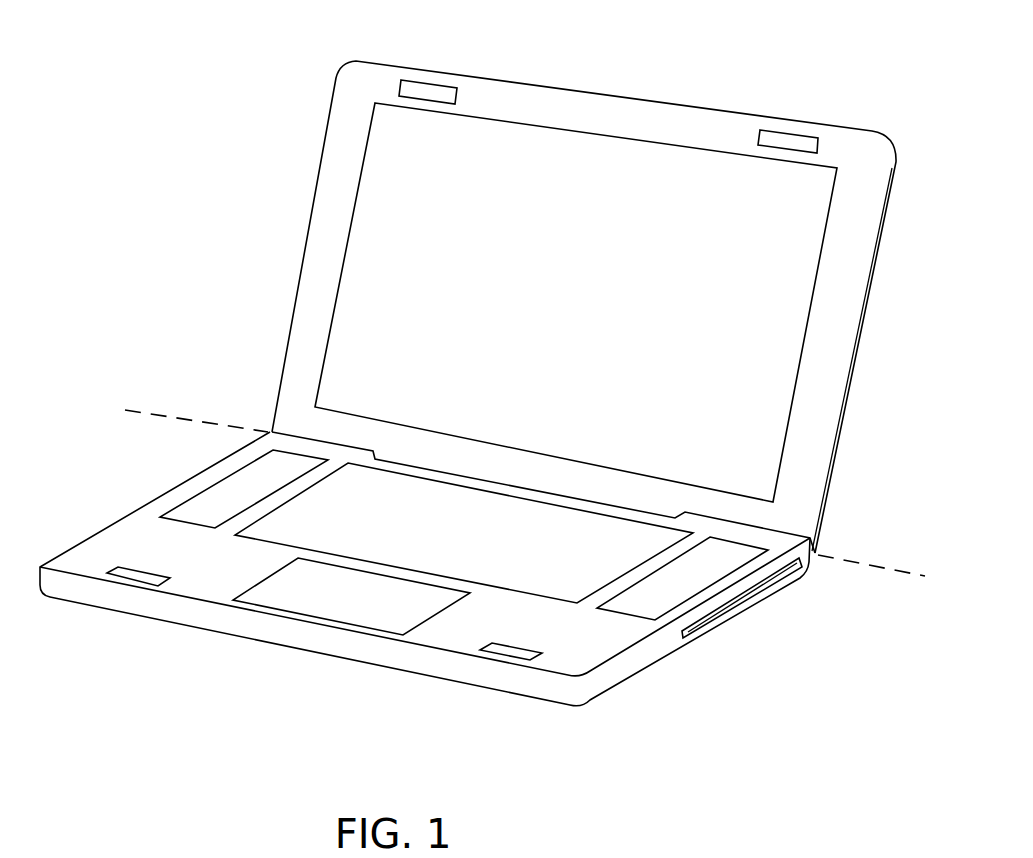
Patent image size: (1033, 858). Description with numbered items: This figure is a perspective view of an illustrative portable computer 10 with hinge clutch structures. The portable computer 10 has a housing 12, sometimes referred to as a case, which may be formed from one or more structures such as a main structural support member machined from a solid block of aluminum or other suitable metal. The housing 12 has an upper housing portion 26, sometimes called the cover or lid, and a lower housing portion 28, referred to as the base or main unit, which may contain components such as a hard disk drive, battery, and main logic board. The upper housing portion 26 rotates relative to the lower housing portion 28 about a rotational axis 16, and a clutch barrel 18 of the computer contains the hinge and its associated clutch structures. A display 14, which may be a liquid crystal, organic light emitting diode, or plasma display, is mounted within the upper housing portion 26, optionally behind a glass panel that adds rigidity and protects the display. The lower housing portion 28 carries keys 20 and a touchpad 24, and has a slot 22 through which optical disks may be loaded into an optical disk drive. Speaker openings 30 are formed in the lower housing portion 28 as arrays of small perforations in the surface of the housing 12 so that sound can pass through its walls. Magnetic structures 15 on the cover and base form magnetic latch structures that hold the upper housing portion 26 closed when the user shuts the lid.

The portable computer 10 is at (800, 60).
The housing 12 is at (286, 130).
The display 14 is at (590, 150).
The magnetic structures 15 is at (430, 88).
The rotational axis 16 is at (158, 412).
The clutch barrel 18 is at (455, 465).
The keys 20 is at (543, 590).
The slot 22 is at (752, 590).
The touchpad 24 is at (263, 593).
The upper housing portion 26 is at (813, 459).
The lower housing portion 28 is at (570, 695).
The speaker openings 30 is at (184, 513).